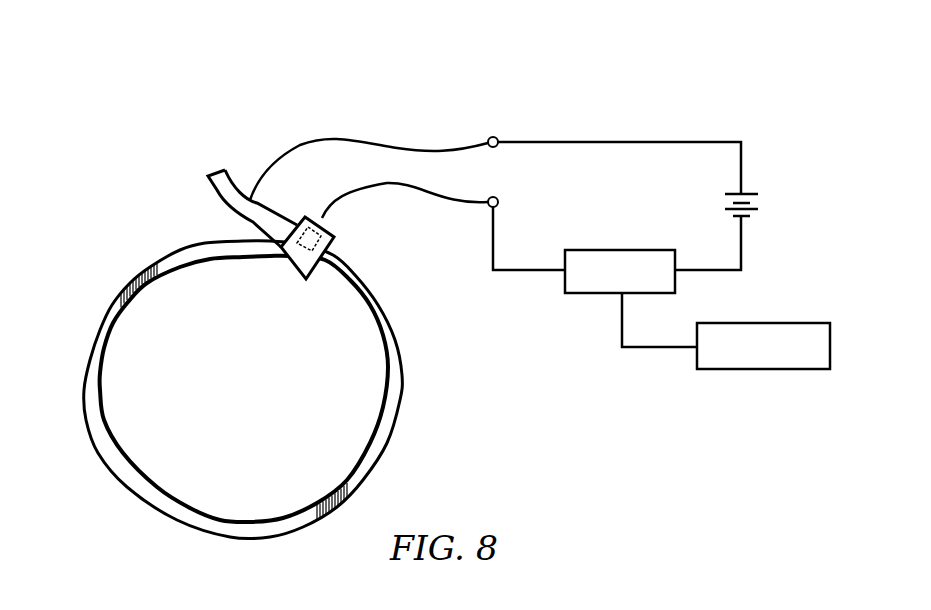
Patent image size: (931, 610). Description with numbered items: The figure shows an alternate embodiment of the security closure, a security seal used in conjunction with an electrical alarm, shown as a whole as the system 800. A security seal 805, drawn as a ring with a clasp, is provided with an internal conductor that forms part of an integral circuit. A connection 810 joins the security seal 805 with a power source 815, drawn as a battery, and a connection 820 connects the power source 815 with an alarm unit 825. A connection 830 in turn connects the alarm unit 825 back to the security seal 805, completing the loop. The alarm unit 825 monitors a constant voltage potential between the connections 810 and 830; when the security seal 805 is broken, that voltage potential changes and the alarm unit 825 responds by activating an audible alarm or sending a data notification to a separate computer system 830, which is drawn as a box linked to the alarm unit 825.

The security seal with electrical alarm 800 is at (308, 102).
The security seal 805 is at (85, 420).
The connection 810 is at (618, 142).
The power source 815 is at (758, 203).
The connection 820 is at (741, 245).
The alarm unit 825 is at (595, 293).
The connection / separate computer system 830 is at (530, 270).